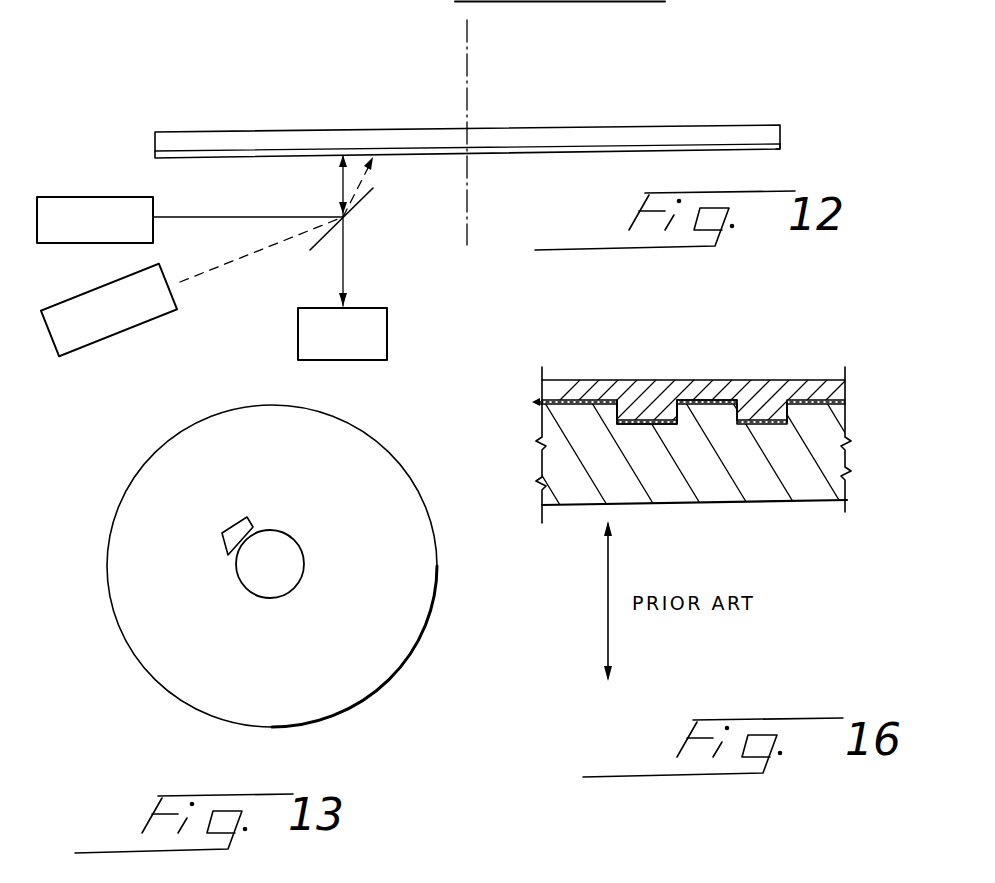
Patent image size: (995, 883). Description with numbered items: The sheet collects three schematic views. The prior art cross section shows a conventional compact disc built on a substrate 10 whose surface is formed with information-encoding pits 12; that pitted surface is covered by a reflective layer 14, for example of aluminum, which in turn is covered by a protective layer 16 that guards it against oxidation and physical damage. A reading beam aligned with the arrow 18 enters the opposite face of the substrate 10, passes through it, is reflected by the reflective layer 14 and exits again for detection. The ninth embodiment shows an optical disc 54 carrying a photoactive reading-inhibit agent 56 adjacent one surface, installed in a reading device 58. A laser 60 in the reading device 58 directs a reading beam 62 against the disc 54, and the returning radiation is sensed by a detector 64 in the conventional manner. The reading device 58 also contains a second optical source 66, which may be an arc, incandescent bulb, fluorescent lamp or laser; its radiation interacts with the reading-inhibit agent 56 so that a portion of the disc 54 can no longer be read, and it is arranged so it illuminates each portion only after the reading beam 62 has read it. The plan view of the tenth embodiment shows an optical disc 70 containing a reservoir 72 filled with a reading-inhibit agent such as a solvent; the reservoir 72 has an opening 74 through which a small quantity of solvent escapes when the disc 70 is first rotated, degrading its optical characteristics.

In FIG. 16, the substrate 10 is at (826, 494).
In FIG. 16, the pits 12 is at (621, 417).
In FIG. 16, the reflective layer 14 is at (703, 400).
In FIG. 16, the protective layer 16 is at (782, 380).
In FIG. 16, the arrow 18 is at (607, 593).
In FIG. 12, the optical disc 54 is at (588, 151).
In FIG. 12, the reading-inhibit agent 56 is at (780, 150).
In FIG. 12, the reading device 58 is at (436, 283).
In FIG. 12, the laser 60 is at (85, 197).
In FIG. 12, the reading beam 62 is at (343, 190).
In FIG. 12, the detector 64 is at (378, 307).
In FIG. 12, the second optical source 66 is at (118, 335).
In FIG. 13, the optical disc 70 is at (167, 670).
In FIG. 13, the reservoir 72 is at (220, 556).
In FIG. 13, the opening 74 is at (226, 533).